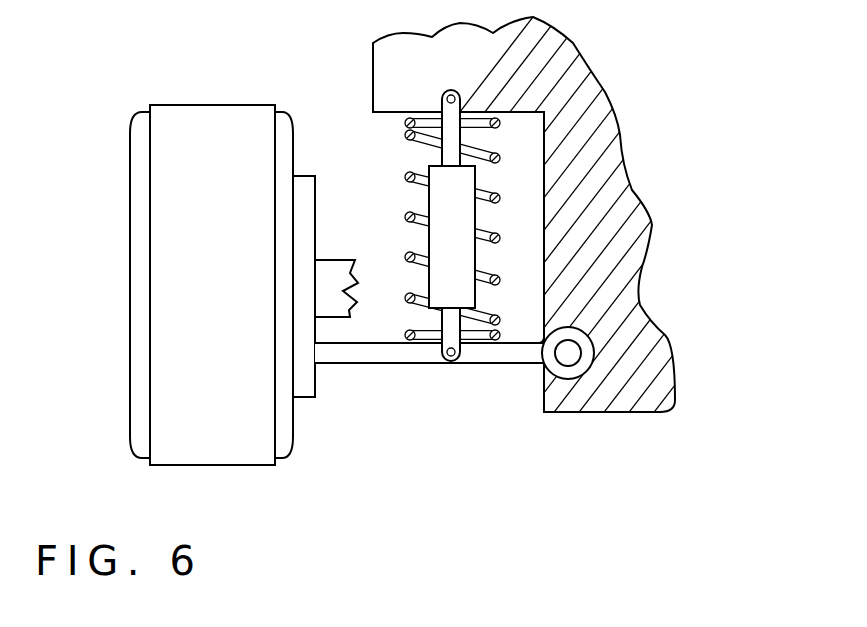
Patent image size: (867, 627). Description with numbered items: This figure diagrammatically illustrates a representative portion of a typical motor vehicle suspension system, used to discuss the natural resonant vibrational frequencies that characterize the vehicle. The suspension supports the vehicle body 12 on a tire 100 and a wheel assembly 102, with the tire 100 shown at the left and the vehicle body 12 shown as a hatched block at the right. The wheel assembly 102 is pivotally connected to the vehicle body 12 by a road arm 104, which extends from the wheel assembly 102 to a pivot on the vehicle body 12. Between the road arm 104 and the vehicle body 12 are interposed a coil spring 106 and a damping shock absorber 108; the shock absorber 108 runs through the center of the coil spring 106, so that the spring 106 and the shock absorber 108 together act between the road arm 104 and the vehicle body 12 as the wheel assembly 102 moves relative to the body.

The vehicle body 12 is at (585, 90).
The tire 100 is at (203, 117).
The wheel assembly 102 is at (333, 265).
The road arm 104 is at (400, 355).
The coil spring 106 is at (487, 180).
The damping shock absorber 108 is at (458, 258).